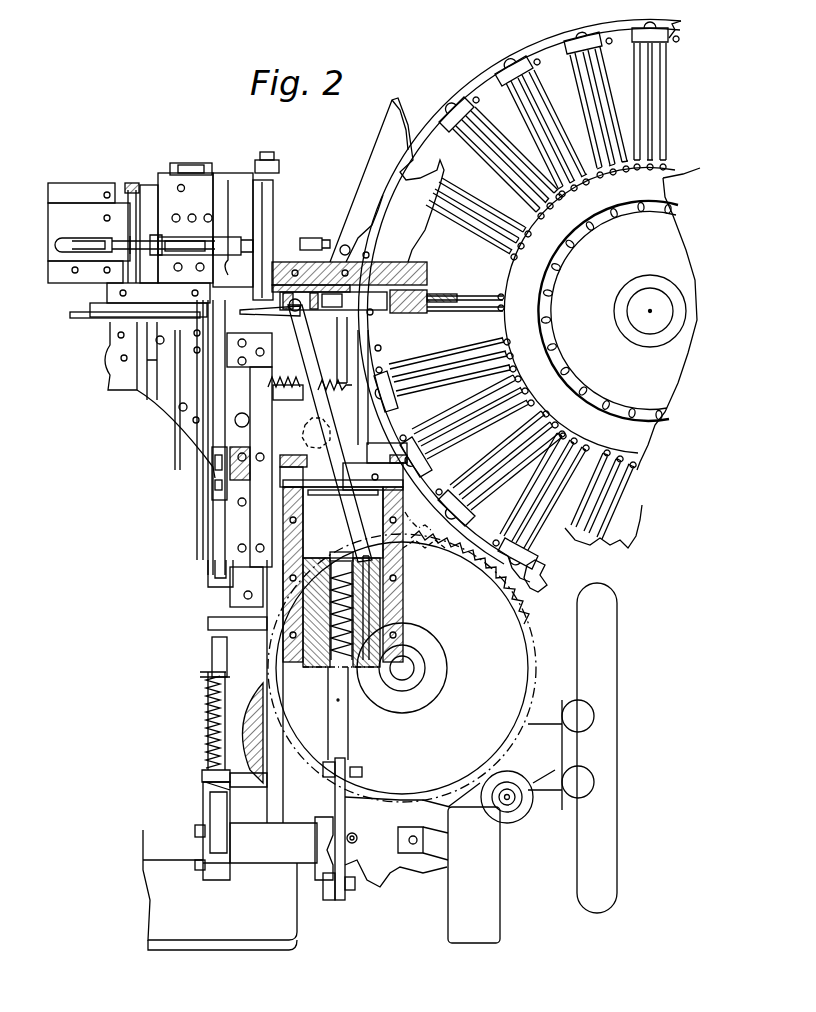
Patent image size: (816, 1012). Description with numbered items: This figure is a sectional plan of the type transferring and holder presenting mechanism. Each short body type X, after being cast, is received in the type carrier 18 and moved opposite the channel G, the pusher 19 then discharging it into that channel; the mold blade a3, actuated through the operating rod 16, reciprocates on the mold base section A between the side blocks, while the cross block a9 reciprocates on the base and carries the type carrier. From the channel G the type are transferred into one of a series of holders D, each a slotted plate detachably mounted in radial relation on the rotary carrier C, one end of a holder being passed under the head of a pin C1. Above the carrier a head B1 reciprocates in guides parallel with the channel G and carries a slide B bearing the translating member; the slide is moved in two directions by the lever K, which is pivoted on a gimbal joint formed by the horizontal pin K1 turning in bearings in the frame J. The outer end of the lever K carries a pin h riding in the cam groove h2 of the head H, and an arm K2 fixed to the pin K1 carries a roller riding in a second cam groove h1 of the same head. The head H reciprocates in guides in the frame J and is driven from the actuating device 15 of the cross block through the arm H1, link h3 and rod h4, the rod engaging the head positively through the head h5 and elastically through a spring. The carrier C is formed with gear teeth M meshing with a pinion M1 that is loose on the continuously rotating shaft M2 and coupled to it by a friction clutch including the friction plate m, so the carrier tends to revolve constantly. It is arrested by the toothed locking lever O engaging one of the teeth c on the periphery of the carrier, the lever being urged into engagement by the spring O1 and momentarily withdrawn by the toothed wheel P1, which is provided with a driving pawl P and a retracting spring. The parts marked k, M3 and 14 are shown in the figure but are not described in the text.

The short body type X is at (495, 300).
The holder D is at (470, 108).
The carrier C is at (495, 100).
The teeth c is at (440, 160).
The locking lever O is at (388, 178).
The channel G is at (327, 262).
The pin C1 is at (375, 377).
The head B1 is at (313, 304).
The slide B is at (330, 430).
The lever K is at (282, 390).
The driving pawl P is at (236, 452).
The toothed wheel P1 is at (215, 460).
The pin K1 is at (282, 480).
The frame J is at (282, 508).
The head H is at (343, 573).
The pin h is at (351, 589).
The plate k is at (342, 506).
The cam groove h1 is at (403, 597).
The cam groove h2 is at (324, 713).
The head h5 is at (355, 715).
The rod h4 is at (340, 742).
The link h3 is at (345, 813).
The arm H1 is at (325, 862).
The gear teeth M is at (560, 556).
The arm K2 is at (424, 562).
The friction plate m is at (427, 642).
The hub M3 is at (433, 668).
The shaft M2 is at (403, 668).
The pinion M1 is at (503, 613).
The operating rod 16 is at (95, 238).
The base section A is at (191, 205).
The mold blade a3 is at (172, 213).
The cross block a9 is at (236, 210).
The pusher 19 is at (162, 308).
The type carrier 18 is at (223, 347).
The spring O1 is at (275, 356).
The pin 14 is at (236, 420).
The actuating device 15 is at (208, 772).